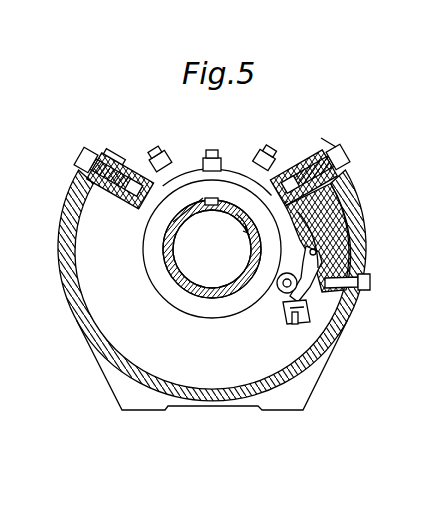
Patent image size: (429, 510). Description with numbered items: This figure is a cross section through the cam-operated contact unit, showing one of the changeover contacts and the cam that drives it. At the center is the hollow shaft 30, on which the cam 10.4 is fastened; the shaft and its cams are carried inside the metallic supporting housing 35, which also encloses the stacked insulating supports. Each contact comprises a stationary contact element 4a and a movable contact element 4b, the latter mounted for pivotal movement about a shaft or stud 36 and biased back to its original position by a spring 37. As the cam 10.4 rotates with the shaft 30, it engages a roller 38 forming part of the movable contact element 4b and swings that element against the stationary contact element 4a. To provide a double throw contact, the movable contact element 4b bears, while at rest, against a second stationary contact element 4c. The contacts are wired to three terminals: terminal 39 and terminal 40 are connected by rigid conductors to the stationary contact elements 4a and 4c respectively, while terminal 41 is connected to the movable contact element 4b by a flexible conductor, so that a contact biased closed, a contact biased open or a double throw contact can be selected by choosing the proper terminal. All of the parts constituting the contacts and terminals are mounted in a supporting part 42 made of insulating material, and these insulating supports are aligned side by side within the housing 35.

The stationary contact element 4a is at (322, 350).
The movable contact element 4b is at (289, 322).
The second stationary contact element 4c is at (292, 313).
The cam 10.4 is at (187, 305).
The hollow shaft 30 is at (167, 273).
The supporting housing 35 is at (68, 283).
The shaft or stud 36 is at (348, 237).
The spring 37 is at (348, 300).
The roller 38 is at (282, 292).
The terminal 39 is at (158, 152).
The terminal 40 is at (219, 148).
The terminal 41 is at (268, 156).
The supporting part 42 is at (64, 221).